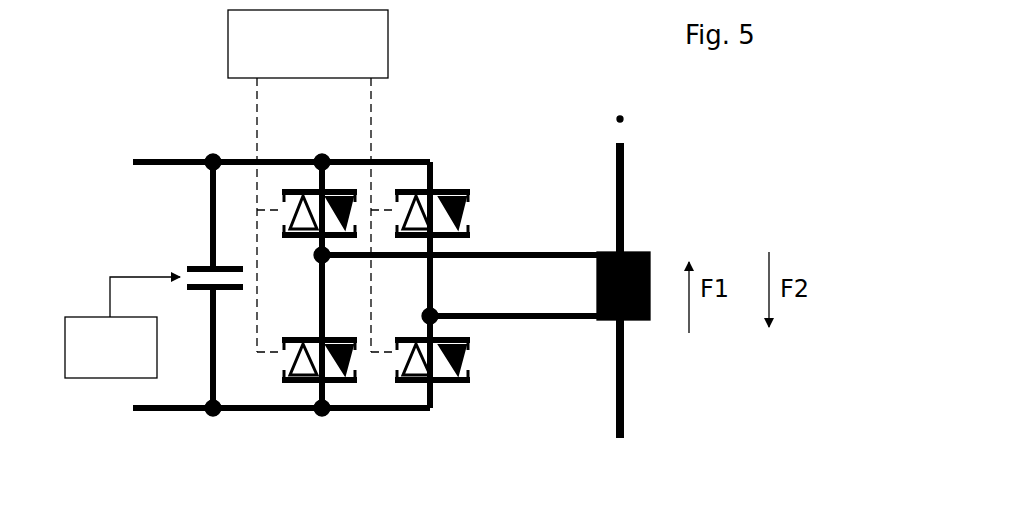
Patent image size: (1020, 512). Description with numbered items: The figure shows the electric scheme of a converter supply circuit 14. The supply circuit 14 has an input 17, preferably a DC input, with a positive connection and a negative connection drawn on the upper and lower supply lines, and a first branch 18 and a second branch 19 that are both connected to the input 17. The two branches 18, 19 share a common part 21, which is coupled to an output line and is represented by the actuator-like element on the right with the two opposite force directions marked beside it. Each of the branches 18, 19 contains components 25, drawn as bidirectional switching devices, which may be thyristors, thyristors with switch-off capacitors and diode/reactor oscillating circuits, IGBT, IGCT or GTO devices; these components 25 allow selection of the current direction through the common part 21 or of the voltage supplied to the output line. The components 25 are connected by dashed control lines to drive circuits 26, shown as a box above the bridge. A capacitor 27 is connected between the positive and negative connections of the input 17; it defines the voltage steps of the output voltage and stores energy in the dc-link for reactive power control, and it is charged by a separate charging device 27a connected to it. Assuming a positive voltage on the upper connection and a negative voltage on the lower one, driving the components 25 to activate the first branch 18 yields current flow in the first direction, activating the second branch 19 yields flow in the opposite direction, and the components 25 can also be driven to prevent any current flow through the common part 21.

The supply circuit 14 is at (157, 63).
The input 17 is at (122, 421).
The first branch 18 is at (243, 432).
The second branch 19 is at (398, 428).
The common part 21 is at (520, 170).
The components 25 is at (465, 345).
The drive circuits 26 is at (326, 55).
The capacitor 27 is at (195, 268).
The charging device 27a is at (138, 362).